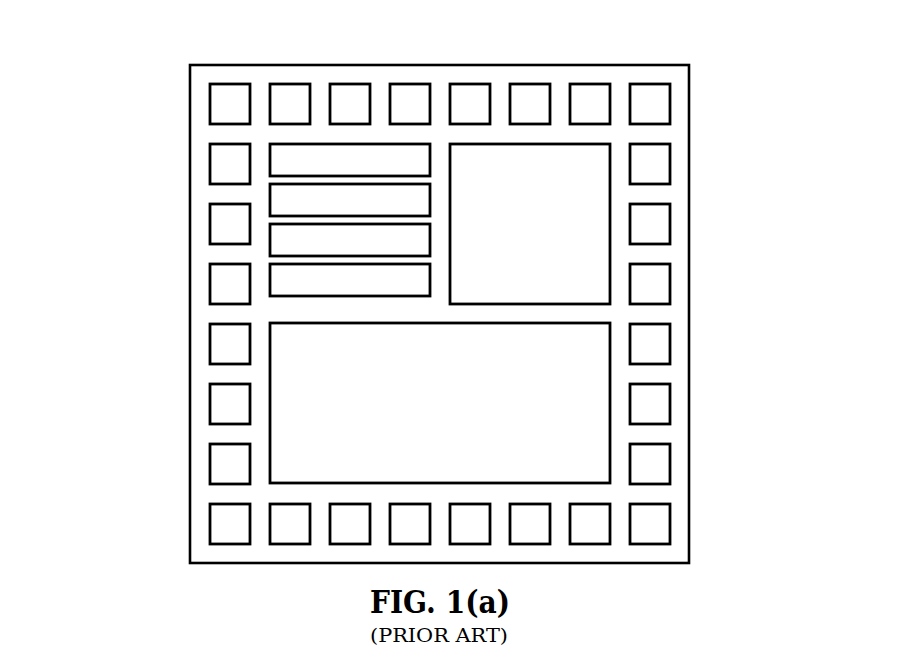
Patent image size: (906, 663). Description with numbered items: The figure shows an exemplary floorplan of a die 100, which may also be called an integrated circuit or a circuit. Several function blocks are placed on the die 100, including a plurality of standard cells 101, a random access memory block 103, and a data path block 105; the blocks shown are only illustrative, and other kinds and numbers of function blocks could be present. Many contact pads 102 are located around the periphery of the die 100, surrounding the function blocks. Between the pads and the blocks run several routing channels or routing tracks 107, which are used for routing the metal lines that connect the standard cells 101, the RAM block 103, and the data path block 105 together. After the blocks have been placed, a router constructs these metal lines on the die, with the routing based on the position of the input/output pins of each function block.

The die 100 is at (245, 53).
The standard cells 101 is at (270, 157).
The contact pads 102 is at (673, 590).
The random access memory (RAM) block 103 is at (548, 253).
The data path block 105 is at (421, 433).
The routing channels 107 is at (678, 315).